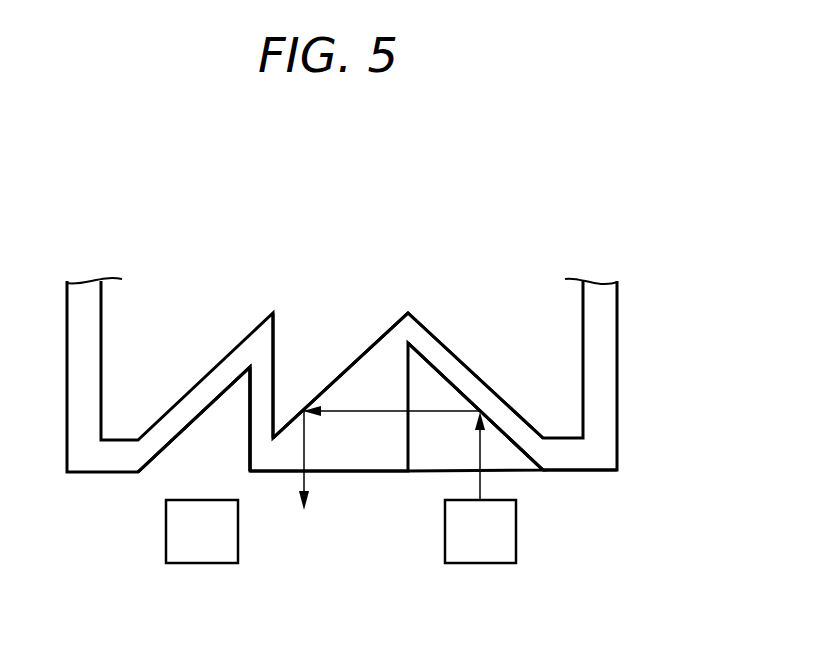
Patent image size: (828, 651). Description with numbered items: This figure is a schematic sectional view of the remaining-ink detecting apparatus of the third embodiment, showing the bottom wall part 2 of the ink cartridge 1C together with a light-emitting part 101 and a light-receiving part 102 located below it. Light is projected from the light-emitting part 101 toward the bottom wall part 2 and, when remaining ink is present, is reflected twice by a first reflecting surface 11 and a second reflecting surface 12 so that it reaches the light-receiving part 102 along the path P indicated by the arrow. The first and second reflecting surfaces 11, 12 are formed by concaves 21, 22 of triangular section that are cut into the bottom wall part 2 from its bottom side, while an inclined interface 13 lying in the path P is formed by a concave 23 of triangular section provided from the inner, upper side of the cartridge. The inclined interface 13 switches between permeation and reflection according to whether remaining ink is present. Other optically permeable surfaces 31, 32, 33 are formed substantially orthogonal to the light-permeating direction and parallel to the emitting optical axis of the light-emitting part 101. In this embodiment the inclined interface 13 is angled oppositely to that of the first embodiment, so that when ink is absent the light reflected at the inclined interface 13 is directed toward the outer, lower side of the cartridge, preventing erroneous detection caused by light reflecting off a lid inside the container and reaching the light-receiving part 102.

The ink cartridge 1C is at (641, 307).
The bottom wall part 2 is at (580, 452).
The first reflecting surface 11 is at (517, 452).
The second reflecting surface 12 is at (173, 443).
The inclined interface 13 is at (372, 343).
The concave 21 is at (446, 447).
The concave 22 is at (236, 447).
The concave 23 is at (331, 352).
The permeable surface 31 is at (408, 452).
The permeable surface 32 is at (247, 452).
The permeable surface 33 is at (277, 373).
The light-emitting part 101 is at (480, 563).
The light-receiving part 102 is at (202, 563).
The path P is at (356, 412).